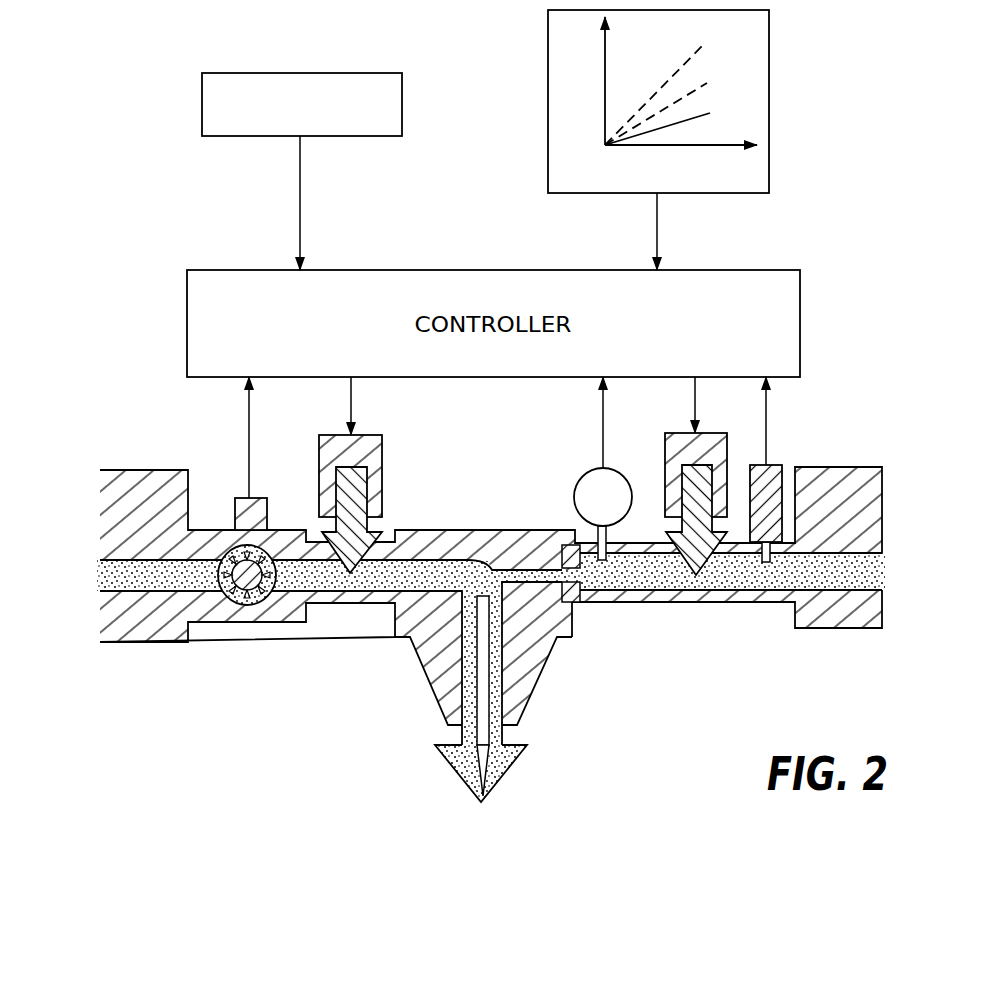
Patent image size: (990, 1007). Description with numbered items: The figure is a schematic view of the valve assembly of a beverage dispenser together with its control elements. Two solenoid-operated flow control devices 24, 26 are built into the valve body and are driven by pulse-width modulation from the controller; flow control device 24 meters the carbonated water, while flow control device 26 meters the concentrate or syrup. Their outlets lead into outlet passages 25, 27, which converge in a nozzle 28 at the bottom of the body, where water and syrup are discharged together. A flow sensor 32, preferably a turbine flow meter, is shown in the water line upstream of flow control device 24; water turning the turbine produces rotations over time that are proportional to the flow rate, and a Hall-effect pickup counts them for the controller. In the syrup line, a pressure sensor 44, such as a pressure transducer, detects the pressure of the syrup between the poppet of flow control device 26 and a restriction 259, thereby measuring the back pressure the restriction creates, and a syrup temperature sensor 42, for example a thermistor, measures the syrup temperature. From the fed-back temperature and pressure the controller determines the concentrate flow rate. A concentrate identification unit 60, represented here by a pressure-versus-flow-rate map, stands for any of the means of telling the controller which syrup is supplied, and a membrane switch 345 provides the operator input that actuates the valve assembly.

The membrane switch 345 is at (202, 93).
The concentrate identification unit 60 is at (770, 105).
The flow control device 24 is at (383, 463).
The pressure sensor 44 is at (583, 478).
The flow control device 26 is at (680, 433).
The syrup temperature sensor 42 is at (770, 465).
The flow sensor 32 is at (245, 583).
The water outlet passage 25 is at (305, 577).
The restriction 259 is at (578, 598).
The outlet passage 27 is at (670, 582).
The nozzle 28 is at (543, 677).